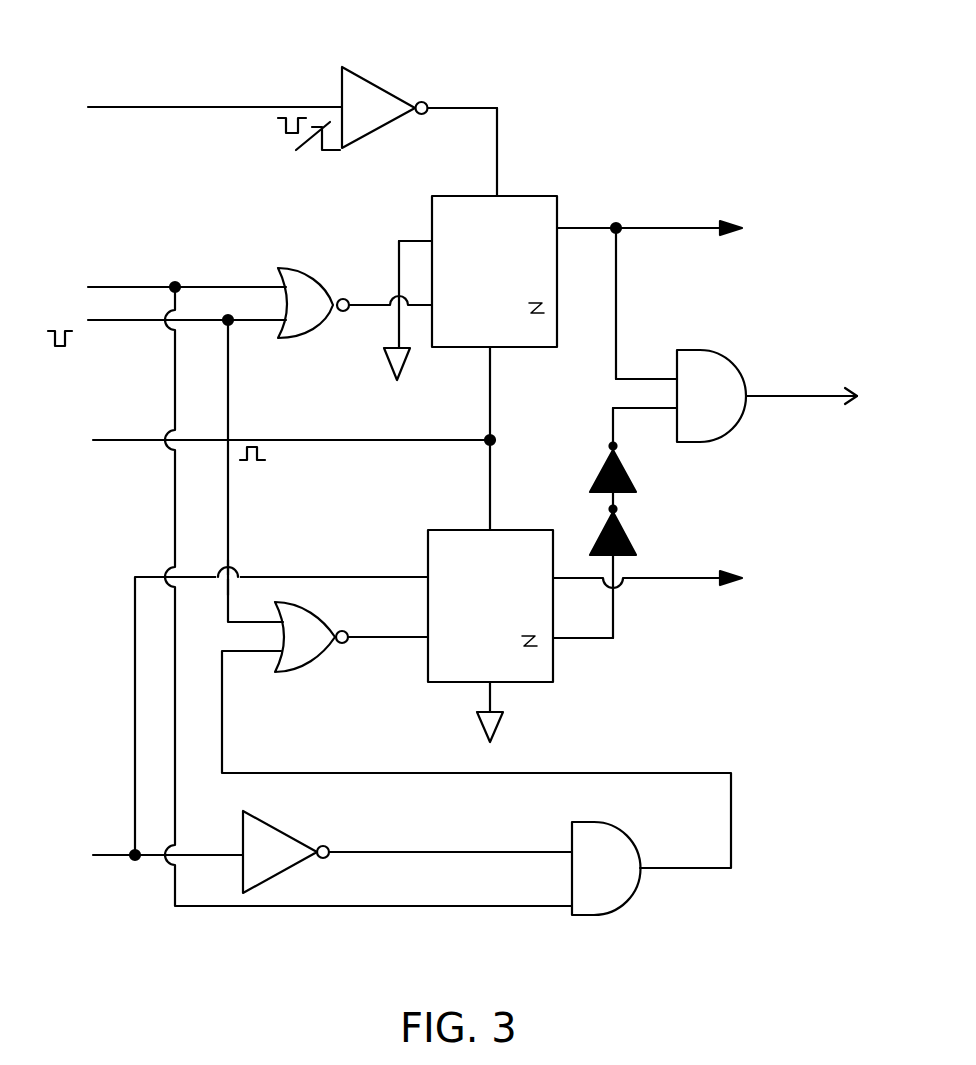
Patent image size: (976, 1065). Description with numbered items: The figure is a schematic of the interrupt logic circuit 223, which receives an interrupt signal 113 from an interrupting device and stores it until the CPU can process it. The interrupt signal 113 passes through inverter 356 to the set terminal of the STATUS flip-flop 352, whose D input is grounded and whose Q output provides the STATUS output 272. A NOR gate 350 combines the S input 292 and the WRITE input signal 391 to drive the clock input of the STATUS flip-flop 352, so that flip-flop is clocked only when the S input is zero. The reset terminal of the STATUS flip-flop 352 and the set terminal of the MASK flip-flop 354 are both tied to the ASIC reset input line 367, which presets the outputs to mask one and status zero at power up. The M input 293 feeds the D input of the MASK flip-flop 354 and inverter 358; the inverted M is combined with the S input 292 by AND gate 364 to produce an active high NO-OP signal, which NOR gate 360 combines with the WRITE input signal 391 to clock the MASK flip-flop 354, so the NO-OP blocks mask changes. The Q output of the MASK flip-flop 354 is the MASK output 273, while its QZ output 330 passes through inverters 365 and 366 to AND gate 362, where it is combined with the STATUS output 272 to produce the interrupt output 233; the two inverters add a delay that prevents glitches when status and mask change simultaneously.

The interrupt logic circuit 223 is at (749, 52).
The interrupt signal 113 is at (199, 113).
The inverter 356 is at (372, 95).
The STATUS flip-flop 352 is at (525, 196).
The NOR gate 350 is at (300, 268).
The S input 292 is at (308, 584).
The WRITE input signal 391 is at (158, 459).
The ASIC reset input line 367 is at (273, 472).
The M input 293 is at (244, 717).
The MASK flip-flop 354 is at (505, 530).
The NOR gate 360 is at (318, 607).
The STATUS output 272 is at (652, 228).
The AND gate 362 is at (690, 350).
The interrupt output 233 is at (762, 396).
The inverter 365 is at (638, 480).
The inverter 366 is at (638, 540).
The MASK output 273 is at (705, 580).
The QZ output 330 is at (598, 641).
The inverter 358 is at (285, 865).
The AND gate 364 is at (590, 917).